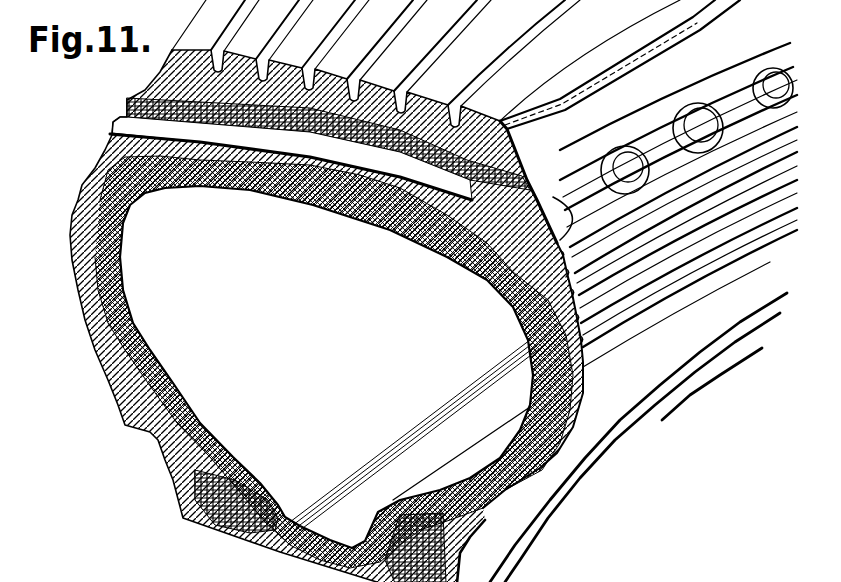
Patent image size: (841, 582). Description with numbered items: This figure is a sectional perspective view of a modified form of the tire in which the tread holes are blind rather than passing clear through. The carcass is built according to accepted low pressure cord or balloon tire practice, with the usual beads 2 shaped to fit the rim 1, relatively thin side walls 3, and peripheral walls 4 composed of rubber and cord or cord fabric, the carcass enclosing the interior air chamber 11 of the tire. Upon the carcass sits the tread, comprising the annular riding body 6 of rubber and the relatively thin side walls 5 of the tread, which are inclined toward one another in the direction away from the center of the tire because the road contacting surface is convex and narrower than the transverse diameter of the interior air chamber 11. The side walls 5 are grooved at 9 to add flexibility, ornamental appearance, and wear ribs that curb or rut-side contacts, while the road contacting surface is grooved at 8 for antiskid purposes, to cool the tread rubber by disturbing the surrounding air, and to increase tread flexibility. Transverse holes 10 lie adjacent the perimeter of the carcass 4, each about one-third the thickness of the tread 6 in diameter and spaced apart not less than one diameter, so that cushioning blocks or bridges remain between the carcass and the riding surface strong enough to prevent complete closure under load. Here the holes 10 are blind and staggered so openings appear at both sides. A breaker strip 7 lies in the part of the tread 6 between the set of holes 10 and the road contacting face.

The rim 1 is at (187, 515).
The beads 2 is at (193, 480).
The side walls 3 is at (110, 367).
The peripheral walls 4 is at (398, 218).
The side walls of the tread 5 is at (580, 323).
The annular riding body 6 is at (440, 140).
The breaker strip 7 is at (288, 160).
The grooves 8 is at (325, 48).
The grooves 9 is at (640, 282).
The transverse holes 10 is at (334, 199).
The interior air chamber 11 is at (400, 390).